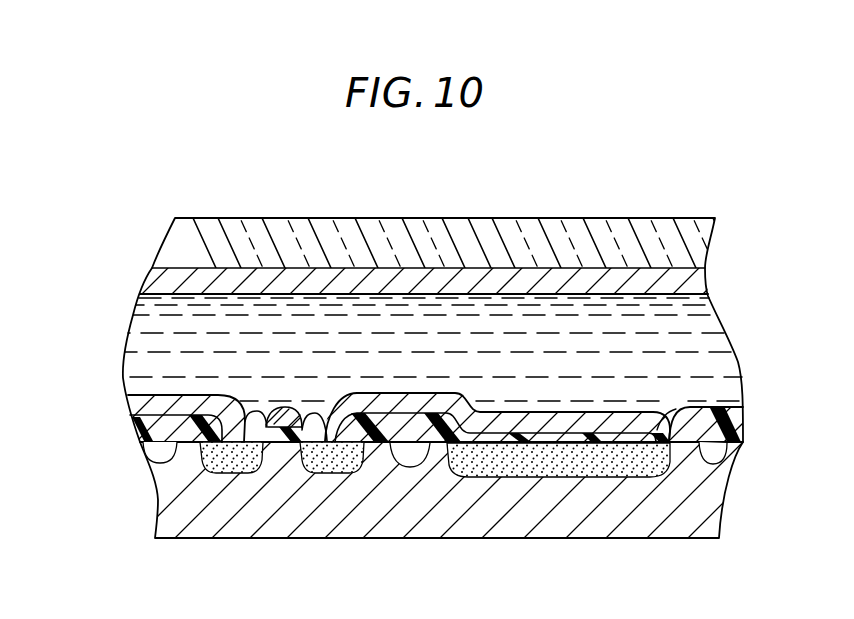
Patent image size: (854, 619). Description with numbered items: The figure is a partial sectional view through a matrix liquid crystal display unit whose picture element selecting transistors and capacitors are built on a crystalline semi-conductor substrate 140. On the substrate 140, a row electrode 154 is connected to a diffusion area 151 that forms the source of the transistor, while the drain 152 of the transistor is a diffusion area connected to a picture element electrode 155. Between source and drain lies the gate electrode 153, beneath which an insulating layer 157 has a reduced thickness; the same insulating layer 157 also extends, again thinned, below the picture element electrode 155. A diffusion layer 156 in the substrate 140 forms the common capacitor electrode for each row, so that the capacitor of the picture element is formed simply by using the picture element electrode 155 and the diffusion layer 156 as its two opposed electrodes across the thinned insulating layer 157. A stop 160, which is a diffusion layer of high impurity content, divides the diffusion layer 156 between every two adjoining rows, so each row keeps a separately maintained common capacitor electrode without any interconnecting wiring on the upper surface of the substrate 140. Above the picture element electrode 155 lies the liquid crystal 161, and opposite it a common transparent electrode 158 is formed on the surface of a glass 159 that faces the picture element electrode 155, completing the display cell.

The semi-conductor substrate 140 is at (558, 526).
The diffusion area 151 is at (200, 471).
The drain 152 is at (336, 462).
The gate electrode 153 is at (280, 428).
The row electrode 154 is at (165, 395).
The picture element electrode 155 is at (672, 440).
The diffusion layer 156 is at (622, 468).
The insulating layer 157 is at (296, 430).
The common transparent electrode 158 is at (690, 277).
The glass 159 is at (568, 227).
The stop 160 is at (413, 453).
The liquid crystal 161 is at (728, 374).